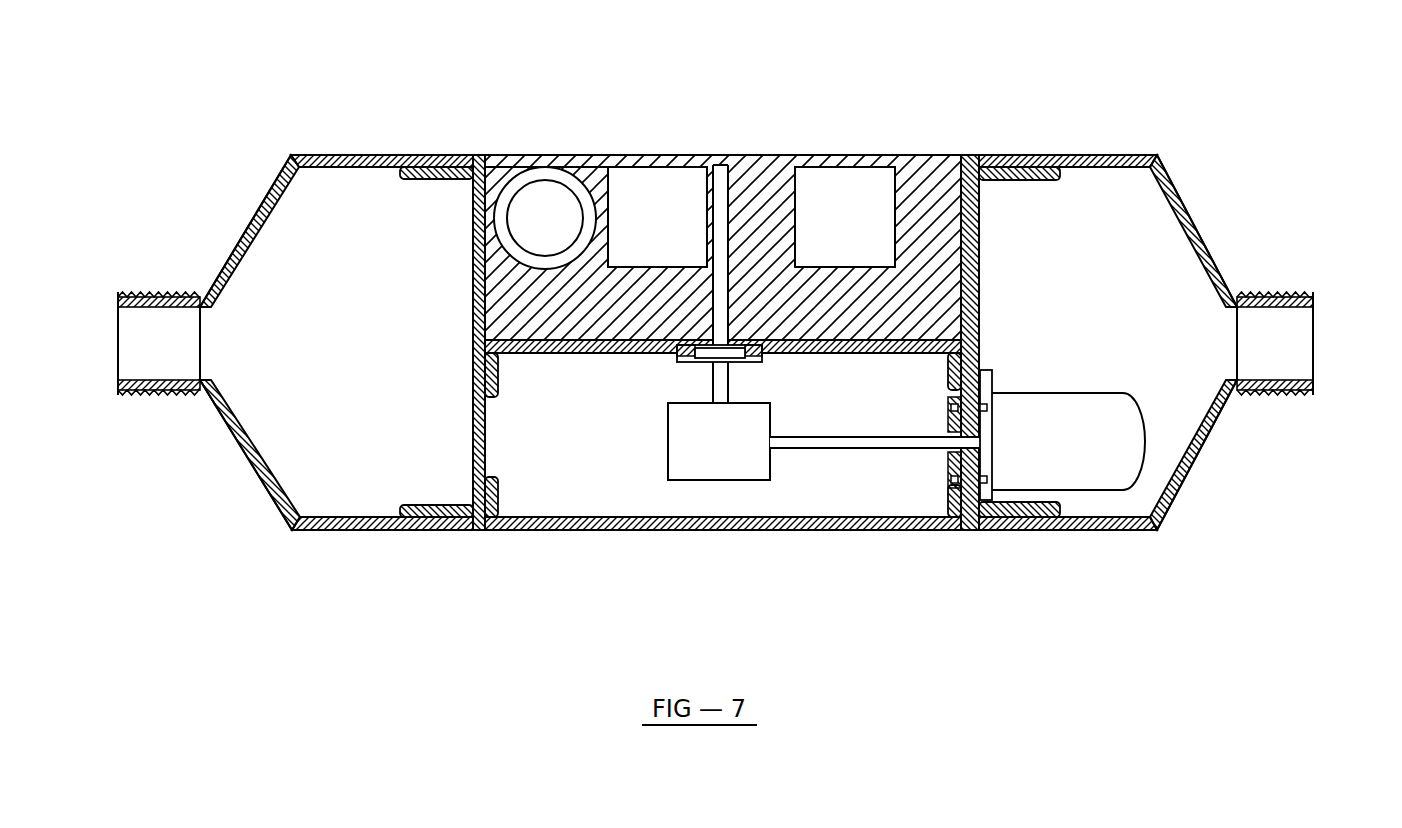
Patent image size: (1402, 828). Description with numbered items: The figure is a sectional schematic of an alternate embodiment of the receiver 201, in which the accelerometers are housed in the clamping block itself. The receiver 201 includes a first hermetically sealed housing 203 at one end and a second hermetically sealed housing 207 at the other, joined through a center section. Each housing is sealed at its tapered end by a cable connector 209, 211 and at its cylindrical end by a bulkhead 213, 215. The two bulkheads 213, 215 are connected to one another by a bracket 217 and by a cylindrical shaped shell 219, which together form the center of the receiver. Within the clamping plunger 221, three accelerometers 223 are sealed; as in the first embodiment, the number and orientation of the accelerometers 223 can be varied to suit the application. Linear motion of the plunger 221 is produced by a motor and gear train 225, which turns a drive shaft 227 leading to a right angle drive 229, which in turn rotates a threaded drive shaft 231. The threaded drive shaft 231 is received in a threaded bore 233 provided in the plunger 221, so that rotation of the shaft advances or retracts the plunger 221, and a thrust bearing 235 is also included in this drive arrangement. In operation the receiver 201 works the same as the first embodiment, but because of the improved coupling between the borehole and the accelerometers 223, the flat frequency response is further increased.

The receiver 201 is at (572, 555).
The first hermetically sealed housing 203 is at (357, 530).
The second hermetically sealed housing 207 is at (1028, 530).
The cable connector 209 is at (152, 390).
The cable connector 211 is at (1270, 297).
The bulkhead 213 is at (472, 452).
The bulkhead 215 is at (982, 233).
The bracket 217 is at (882, 357).
The cylindrical shaped shell 219 is at (653, 530).
The clamping plunger 221 is at (572, 155).
The accelerometers 223 is at (517, 168).
The motor and gear train 225 is at (1105, 477).
The drive shaft 227 is at (865, 443).
The right angle drive 229 is at (753, 465).
The threaded drive shaft 231 is at (720, 388).
The threaded bore 233 is at (737, 165).
The thrust bearing 235 is at (678, 360).